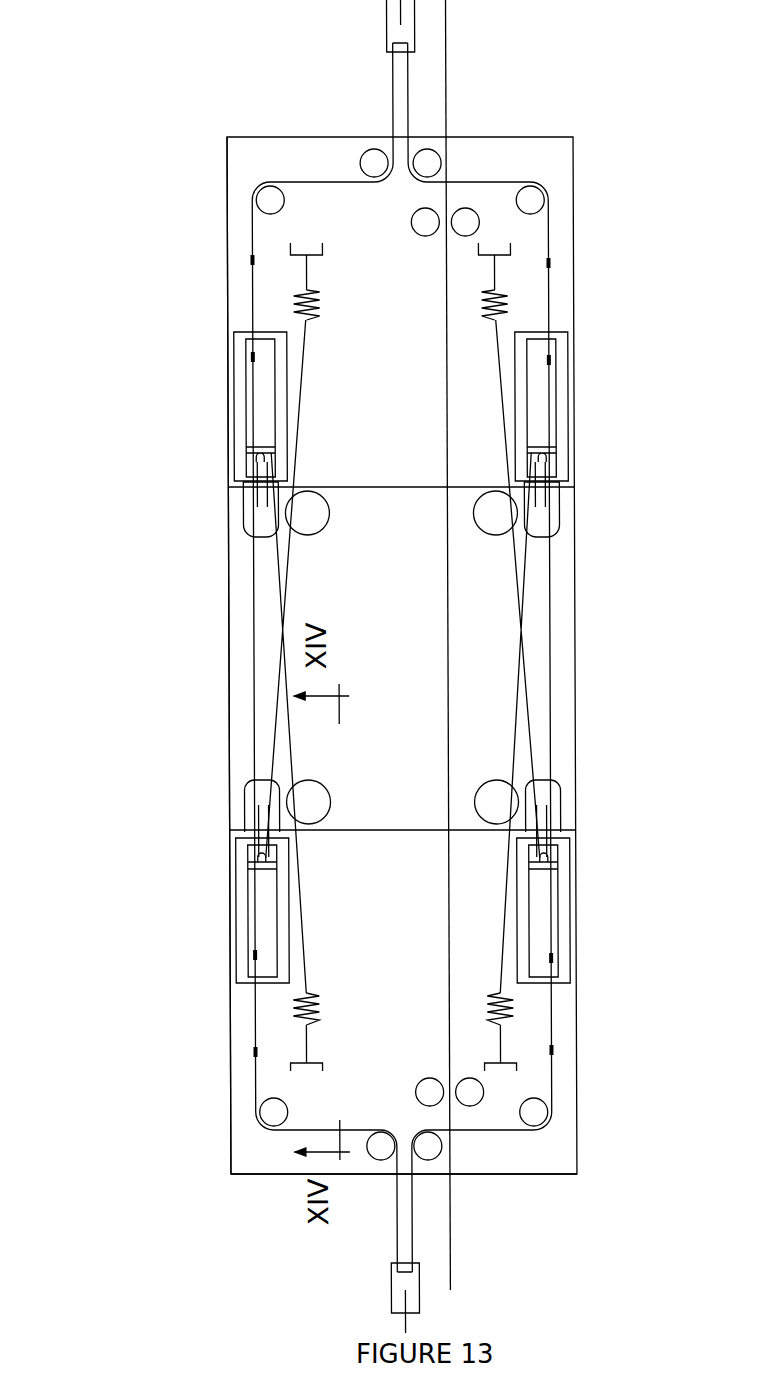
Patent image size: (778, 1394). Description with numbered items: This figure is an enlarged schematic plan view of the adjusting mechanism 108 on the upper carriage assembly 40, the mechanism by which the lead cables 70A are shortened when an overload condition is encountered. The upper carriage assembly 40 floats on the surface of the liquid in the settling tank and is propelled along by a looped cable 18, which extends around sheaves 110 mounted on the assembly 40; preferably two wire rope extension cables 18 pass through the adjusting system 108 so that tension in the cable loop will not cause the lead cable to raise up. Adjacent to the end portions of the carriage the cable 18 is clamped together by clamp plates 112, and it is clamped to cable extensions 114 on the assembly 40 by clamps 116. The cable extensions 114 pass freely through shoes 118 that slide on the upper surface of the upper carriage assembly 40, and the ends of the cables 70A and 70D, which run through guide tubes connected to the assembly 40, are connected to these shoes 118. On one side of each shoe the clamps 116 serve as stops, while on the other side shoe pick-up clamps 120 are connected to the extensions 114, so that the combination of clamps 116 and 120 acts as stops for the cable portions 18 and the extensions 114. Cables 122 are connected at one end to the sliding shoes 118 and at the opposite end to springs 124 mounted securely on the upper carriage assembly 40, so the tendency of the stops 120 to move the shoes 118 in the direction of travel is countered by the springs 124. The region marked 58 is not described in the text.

The looped cable 18 is at (250, 1082).
The upper carriage assembly 40 is at (228, 160).
The chamber 58 is at (557, 305).
The lead cable 70A is at (259, 813).
The cable 70D is at (257, 507).
The adjusting mechanism 108 is at (237, 1008).
The sheave 110 is at (272, 195).
The clamp plate 112 is at (387, 12).
The cable extension 114 is at (251, 640).
The clamp 116 is at (253, 258).
The shoe 118 is at (234, 392).
The shoe pick-up clamp 120 is at (253, 356).
The cable 122 is at (298, 362).
The spring 124 is at (306, 290).